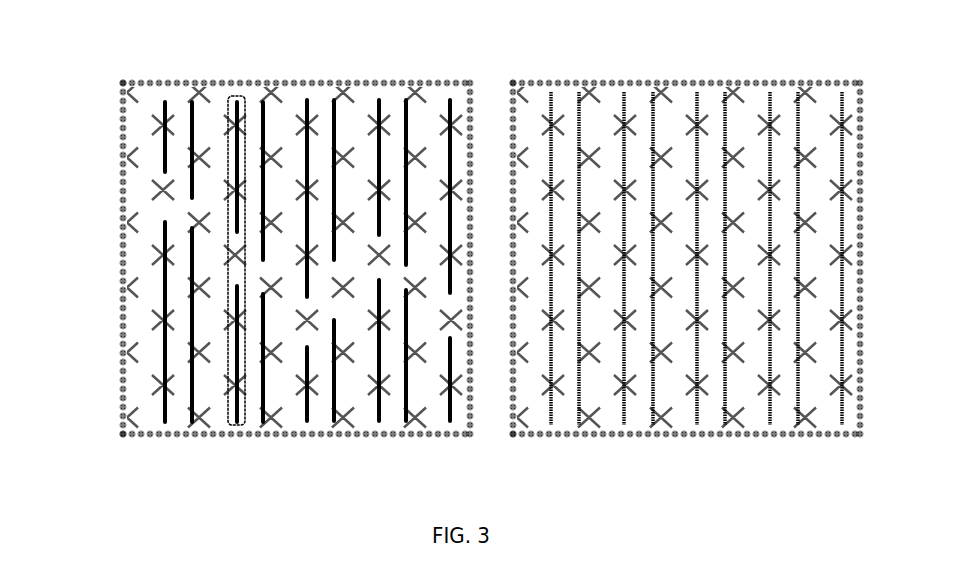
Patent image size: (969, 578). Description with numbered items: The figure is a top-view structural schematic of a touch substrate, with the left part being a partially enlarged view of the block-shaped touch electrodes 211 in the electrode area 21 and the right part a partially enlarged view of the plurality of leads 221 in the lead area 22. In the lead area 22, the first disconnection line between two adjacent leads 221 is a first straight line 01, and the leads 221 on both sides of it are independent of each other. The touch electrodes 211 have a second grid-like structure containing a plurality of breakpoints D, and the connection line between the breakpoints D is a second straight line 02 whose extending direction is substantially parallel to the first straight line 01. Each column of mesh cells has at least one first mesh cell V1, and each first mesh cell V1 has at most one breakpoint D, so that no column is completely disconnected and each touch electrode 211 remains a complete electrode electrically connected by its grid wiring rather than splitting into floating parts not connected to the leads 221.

The electrode area 21 is at (275, 260).
The lead area 22 is at (691, 264).
The touch electrode 211 is at (335, 81).
The lead 221 is at (563, 128).
The second straight line 02 is at (237, 96).
The first straight line 01 is at (576, 118).
The breakpoint D is at (187, 117).
The first mesh cell V1 is at (148, 165).